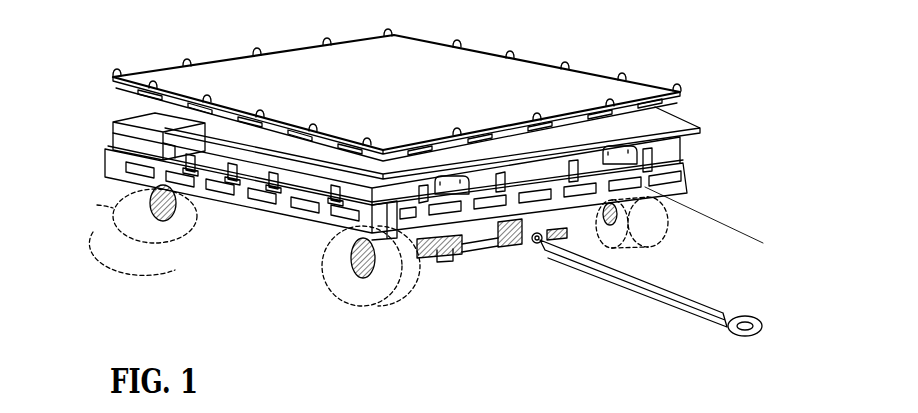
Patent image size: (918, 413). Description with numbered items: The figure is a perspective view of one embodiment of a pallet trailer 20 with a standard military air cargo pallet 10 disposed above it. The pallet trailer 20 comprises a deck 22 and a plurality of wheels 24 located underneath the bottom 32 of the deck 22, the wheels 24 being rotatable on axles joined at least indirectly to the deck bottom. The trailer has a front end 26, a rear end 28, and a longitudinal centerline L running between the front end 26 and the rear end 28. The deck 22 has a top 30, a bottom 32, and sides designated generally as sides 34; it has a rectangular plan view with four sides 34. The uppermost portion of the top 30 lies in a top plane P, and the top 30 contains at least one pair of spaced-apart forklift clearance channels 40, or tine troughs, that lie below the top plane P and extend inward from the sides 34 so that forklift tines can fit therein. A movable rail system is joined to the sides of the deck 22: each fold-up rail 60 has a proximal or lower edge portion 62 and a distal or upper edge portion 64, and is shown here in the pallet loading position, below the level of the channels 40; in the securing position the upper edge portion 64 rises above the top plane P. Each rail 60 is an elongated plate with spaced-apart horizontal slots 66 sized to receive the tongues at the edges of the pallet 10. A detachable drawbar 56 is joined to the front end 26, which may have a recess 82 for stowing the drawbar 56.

The 463L pallet 10 is at (393, 87).
The pallet trailer 20 is at (506, 333).
The deck 22 is at (280, 165).
The wheels 24 is at (363, 293).
The front end 26 is at (477, 253).
The rear end 28 is at (104, 112).
The top 30 is at (675, 122).
The bottom 32 is at (390, 272).
The sides 34 is at (358, 294).
The forklift clearance channels 40 is at (183, 147).
The detachable drawbar 56 is at (678, 288).
The fold-up rail 60 is at (240, 205).
The proximal portion 62 is at (212, 165).
The distal portion 64 is at (278, 208).
The slots 66 is at (305, 210).
The recess 82 is at (527, 243).
The longitudinal centerline L is at (723, 228).
The top plane P is at (680, 130).